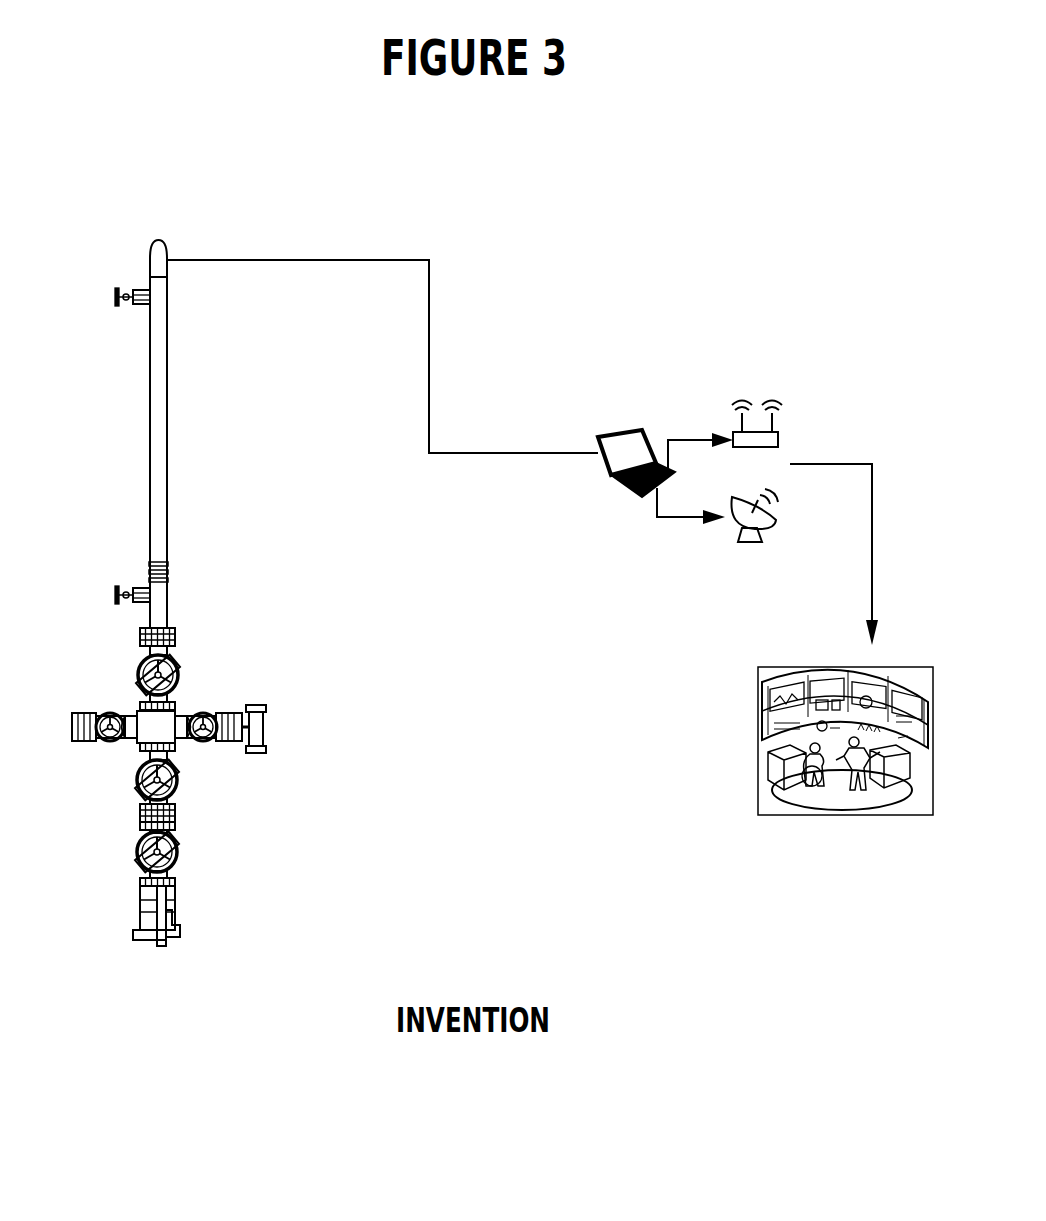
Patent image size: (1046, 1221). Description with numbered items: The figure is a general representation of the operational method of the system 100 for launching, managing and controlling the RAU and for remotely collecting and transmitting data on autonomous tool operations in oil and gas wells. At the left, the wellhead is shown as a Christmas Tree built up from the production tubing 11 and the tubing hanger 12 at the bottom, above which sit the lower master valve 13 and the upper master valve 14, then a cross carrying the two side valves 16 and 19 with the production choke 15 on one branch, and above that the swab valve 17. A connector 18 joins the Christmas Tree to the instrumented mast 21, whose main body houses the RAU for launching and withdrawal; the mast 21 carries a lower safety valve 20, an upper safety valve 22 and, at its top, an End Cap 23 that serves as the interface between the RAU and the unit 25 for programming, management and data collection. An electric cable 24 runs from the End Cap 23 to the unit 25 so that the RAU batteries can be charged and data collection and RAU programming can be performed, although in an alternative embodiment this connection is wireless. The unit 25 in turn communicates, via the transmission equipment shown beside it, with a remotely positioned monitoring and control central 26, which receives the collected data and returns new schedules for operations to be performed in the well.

The system 100 is at (492, 864).
The production tubing 11 is at (180, 940).
The tubing hanger 12 is at (174, 905).
The lower master valve 13 is at (177, 848).
The upper master valve 14 is at (177, 788).
The production choke 15 is at (266, 724).
The side valve 16 is at (215, 715).
The swab valve 17 is at (178, 672).
The connector 18 is at (172, 630).
The side valve 19 is at (105, 716).
The lower safety valve 20 is at (140, 603).
The mast 21 is at (150, 432).
The upper safety valve 22 is at (140, 305).
The End Cap 23 is at (150, 262).
The electric cable 24 is at (430, 300).
The unit for programming, management and data collection 25 is at (618, 482).
The monitoring and control central 26 is at (758, 680).